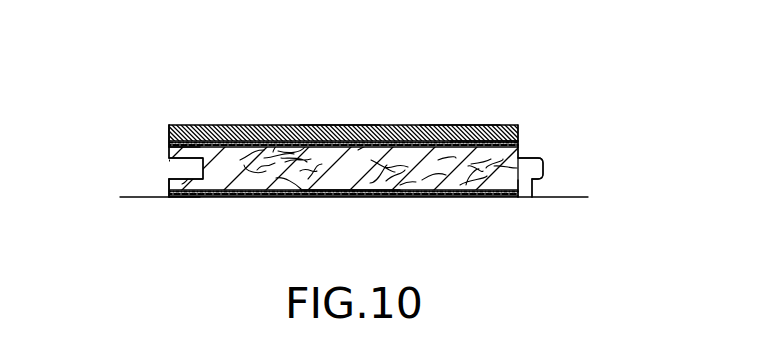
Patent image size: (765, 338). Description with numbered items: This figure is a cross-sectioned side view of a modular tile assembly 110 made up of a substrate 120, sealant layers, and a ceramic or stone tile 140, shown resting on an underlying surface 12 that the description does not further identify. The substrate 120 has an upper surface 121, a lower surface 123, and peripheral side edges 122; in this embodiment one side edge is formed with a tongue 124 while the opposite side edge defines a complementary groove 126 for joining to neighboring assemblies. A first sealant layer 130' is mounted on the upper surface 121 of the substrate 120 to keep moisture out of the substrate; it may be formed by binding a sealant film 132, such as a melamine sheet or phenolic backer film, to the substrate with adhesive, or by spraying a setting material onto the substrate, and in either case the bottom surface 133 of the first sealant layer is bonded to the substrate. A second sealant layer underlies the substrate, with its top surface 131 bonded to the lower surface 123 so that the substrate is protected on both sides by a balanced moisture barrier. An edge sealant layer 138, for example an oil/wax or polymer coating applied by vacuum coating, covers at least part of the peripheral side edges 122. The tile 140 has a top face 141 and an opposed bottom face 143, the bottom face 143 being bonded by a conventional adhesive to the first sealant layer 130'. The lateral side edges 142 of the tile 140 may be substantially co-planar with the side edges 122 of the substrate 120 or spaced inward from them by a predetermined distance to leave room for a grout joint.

The subfloor 12 is at (567, 198).
The modular tile assembly 110 is at (507, 95).
The substrate 120 is at (546, 170).
The upper surface of the substrate 121 is at (414, 150).
The peripheral side edges of the substrate 122 is at (520, 158).
The lower surface of the substrate 123 is at (331, 195).
The tongue 124 is at (527, 194).
The groove 126 is at (170, 167).
The first sealant layer 130' is at (126, 122).
The top surface of the sealant layer 131 is at (336, 127).
The sealant film 132 is at (197, 127).
The bottom surface of the first sealant layer 133 is at (395, 127).
The edge sealant layer 138 is at (520, 148).
The ceramic or stone tile 140 is at (520, 139).
The top face of the tile 141 is at (282, 127).
The lateral side edges of the tile 142 is at (168, 126).
The bottom face of the tile 143 is at (452, 127).